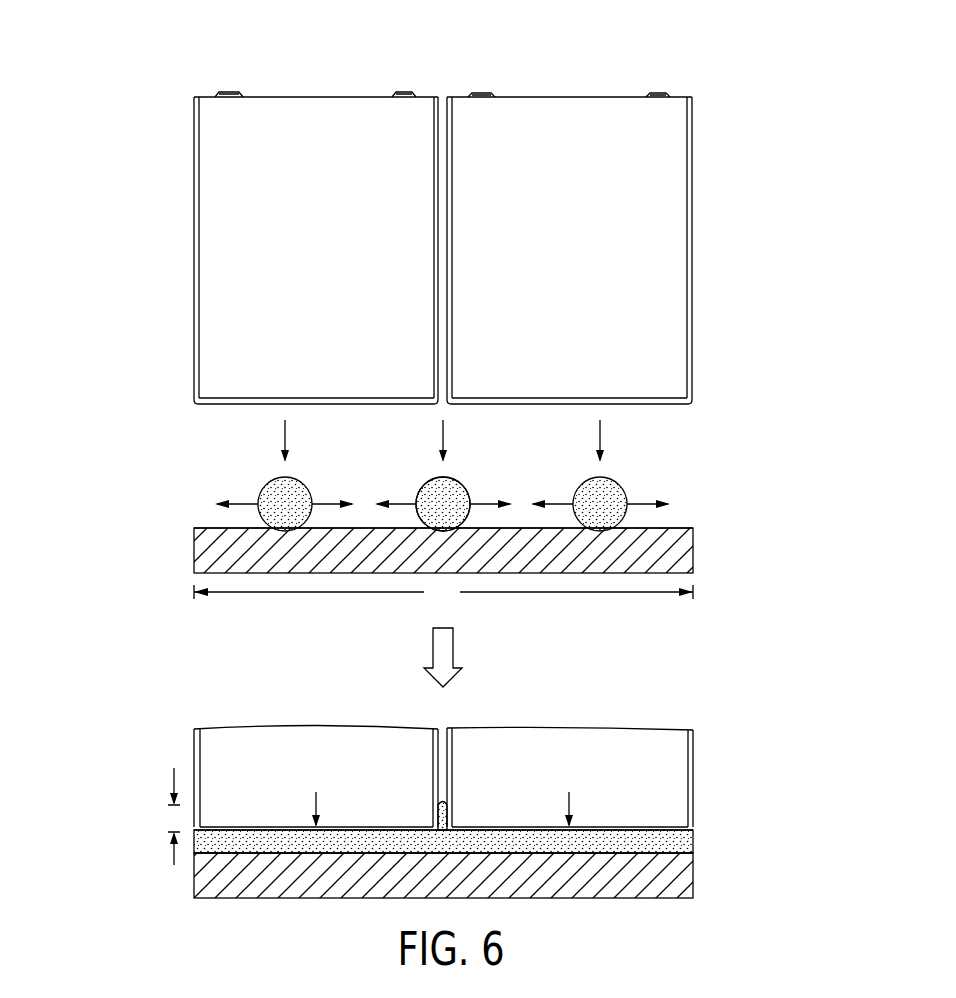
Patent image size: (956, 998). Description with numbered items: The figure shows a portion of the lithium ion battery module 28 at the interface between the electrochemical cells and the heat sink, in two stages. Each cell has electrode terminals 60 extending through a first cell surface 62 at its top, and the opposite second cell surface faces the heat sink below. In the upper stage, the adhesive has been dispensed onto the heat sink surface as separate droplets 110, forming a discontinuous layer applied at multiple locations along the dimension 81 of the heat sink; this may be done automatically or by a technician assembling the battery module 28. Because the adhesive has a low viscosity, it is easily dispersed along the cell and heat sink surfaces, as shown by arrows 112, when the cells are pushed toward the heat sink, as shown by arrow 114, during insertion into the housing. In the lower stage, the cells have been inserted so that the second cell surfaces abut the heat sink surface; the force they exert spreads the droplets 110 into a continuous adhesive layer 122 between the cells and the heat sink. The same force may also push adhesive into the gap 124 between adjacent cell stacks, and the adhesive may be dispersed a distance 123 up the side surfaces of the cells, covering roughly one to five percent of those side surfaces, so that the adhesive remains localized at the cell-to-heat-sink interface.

The battery module 28 is at (698, 49).
The electrode terminals 60 is at (235, 92).
The first cell surface 62 is at (316, 97).
The dimension 81 is at (443, 593).
The droplets 110 is at (464, 489).
The arrows 112 is at (652, 500).
The arrow 114 is at (287, 436).
The continuous adhesive layer 122 is at (695, 845).
The distance 123 is at (174, 776).
The gap 124 is at (446, 816).